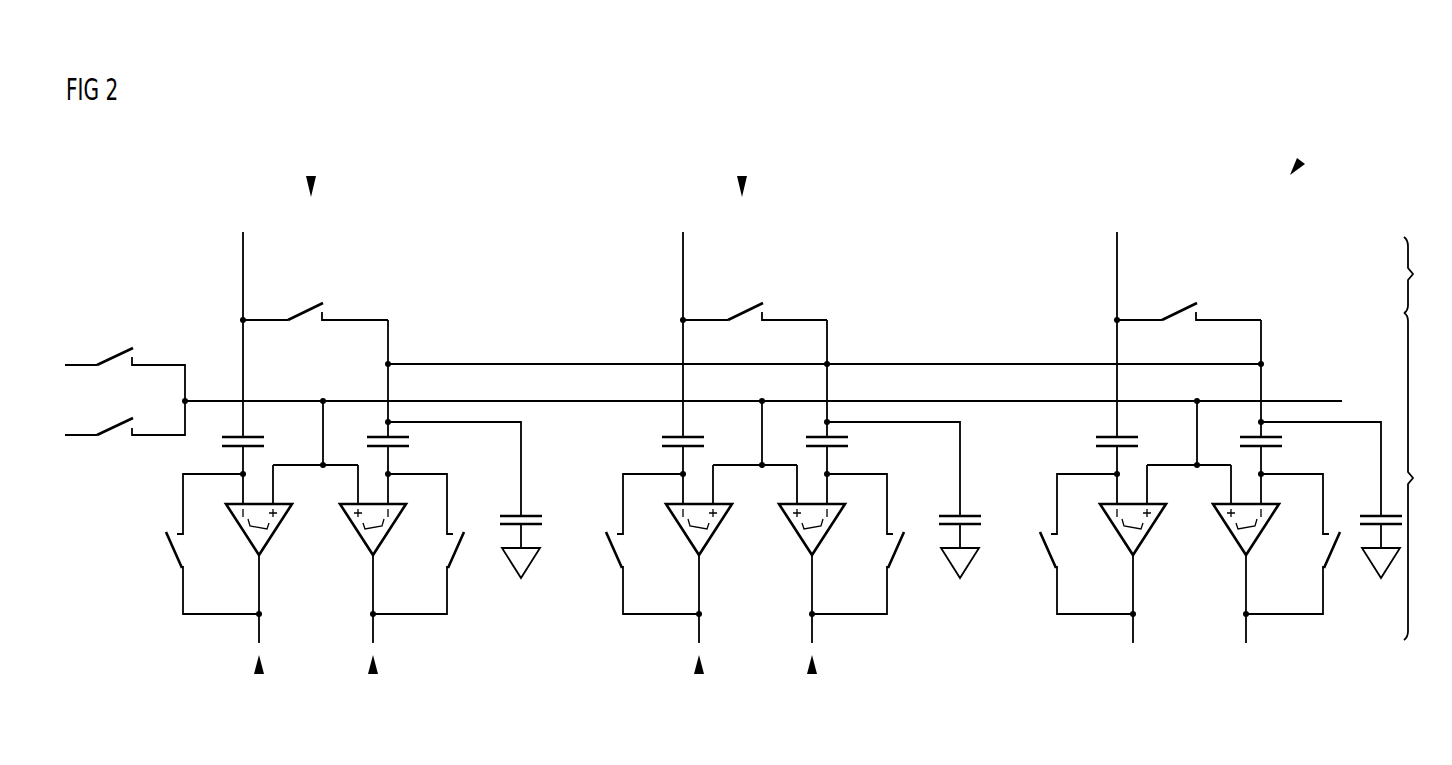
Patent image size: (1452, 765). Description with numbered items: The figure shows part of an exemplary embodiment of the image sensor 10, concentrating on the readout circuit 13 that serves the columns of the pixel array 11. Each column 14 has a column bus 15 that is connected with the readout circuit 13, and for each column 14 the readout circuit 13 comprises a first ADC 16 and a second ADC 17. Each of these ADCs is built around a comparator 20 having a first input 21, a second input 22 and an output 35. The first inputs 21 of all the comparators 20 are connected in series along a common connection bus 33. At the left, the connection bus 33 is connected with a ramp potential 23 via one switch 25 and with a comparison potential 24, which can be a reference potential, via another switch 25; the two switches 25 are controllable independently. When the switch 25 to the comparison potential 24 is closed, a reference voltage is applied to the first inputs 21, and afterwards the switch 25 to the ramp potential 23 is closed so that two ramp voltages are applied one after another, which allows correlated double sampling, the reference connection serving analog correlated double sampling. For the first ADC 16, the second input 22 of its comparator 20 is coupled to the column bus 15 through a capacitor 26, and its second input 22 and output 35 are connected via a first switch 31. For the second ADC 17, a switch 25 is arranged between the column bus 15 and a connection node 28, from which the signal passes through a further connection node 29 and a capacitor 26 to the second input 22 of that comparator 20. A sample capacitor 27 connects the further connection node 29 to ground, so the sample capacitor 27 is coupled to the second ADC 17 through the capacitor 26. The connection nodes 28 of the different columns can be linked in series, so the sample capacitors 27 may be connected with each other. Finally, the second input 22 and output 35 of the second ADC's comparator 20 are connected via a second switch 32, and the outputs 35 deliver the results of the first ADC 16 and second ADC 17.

The image sensor 10 is at (1301, 161).
The pixel array 11 is at (1423, 275).
The readout circuit 13 is at (1423, 476).
The column 14 is at (312, 177).
The column bus 15 is at (243, 268).
The first ADC 16 is at (259, 676).
The second ADC 17 is at (373, 676).
The comparator 20 is at (272, 560).
The first input 21 is at (278, 485).
The second input 22 is at (243, 486).
The ramp potential 23 is at (80, 434).
The comparison potential 24 is at (79, 364).
The switch 25 is at (116, 352).
The capacitor 26 is at (250, 435).
The sample capacitor 27 is at (521, 514).
The connection node 28 is at (389, 363).
The further connection node 29 is at (390, 421).
The first switch 31 is at (180, 560).
The second switch 32 is at (464, 560).
The connection bus 33 is at (233, 399).
The output 35 is at (257, 563).